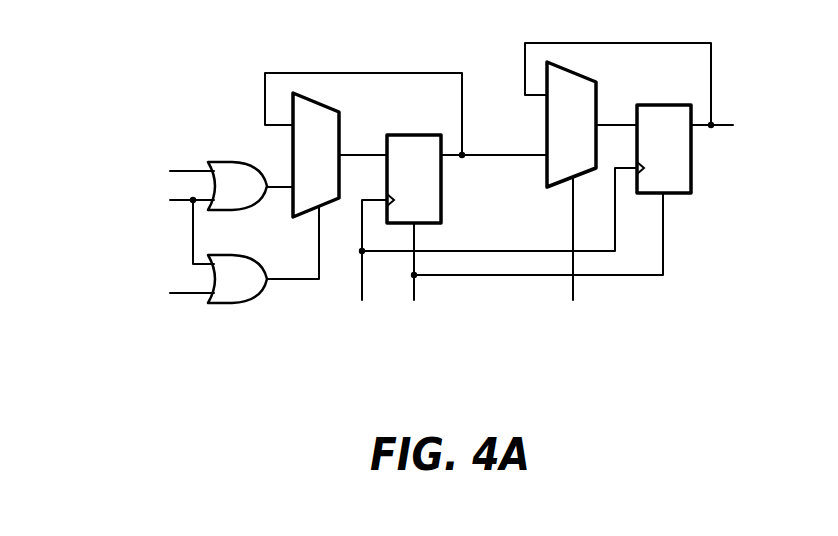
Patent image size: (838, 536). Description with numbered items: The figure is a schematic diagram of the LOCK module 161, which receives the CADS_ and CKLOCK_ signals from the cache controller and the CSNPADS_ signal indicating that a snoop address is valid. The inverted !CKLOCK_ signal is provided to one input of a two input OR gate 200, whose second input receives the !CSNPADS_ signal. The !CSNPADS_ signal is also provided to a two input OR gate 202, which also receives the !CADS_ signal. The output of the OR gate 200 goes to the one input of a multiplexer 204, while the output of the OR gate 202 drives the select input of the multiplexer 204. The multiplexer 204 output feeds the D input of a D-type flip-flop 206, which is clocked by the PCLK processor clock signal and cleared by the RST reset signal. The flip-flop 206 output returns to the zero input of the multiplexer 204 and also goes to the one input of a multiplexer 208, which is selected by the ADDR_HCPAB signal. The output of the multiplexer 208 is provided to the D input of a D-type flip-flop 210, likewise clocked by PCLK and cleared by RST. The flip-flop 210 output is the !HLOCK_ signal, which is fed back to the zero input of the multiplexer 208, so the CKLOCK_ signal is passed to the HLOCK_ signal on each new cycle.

The LOCK module 161 is at (258, 373).
The OR gate 200 is at (232, 161).
The OR gate 202 is at (237, 302).
The multiplexer 204 is at (316, 103).
The D-type flip-flop 206 is at (442, 196).
The multiplexer 208 is at (575, 72).
The D-type flip-flop 210 is at (692, 168).